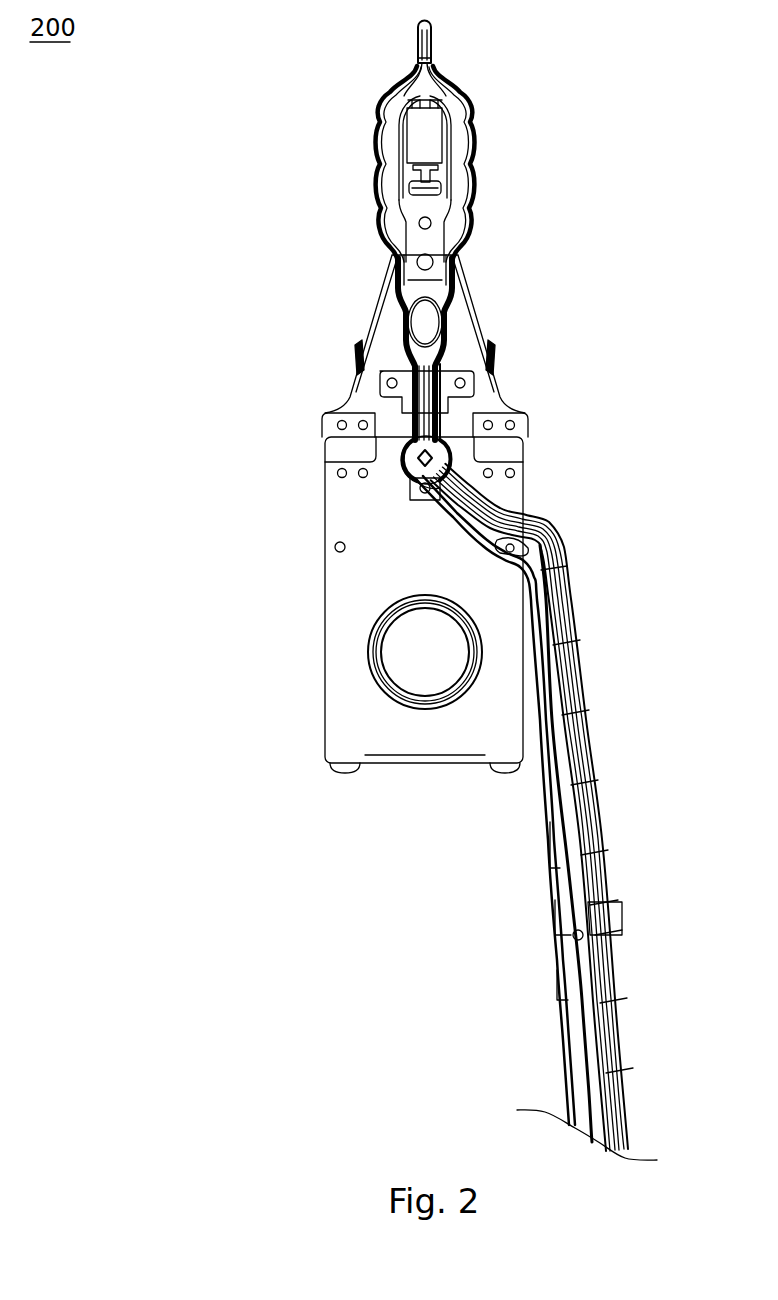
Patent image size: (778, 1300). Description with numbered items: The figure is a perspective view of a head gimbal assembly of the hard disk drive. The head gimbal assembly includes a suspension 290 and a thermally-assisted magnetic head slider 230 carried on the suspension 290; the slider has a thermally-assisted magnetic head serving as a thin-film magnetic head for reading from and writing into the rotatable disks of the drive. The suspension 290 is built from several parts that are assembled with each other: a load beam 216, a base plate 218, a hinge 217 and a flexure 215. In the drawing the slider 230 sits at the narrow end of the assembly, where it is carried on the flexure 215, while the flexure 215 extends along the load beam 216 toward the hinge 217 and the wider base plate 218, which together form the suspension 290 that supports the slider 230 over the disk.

The thermally-assisted magnetic head slider 230 is at (418, 138).
The flexure 215 is at (417, 290).
The load beam 216 is at (385, 364).
The suspension 290 is at (352, 570).
The hinge 217 is at (348, 448).
The base plate 218 is at (352, 575).